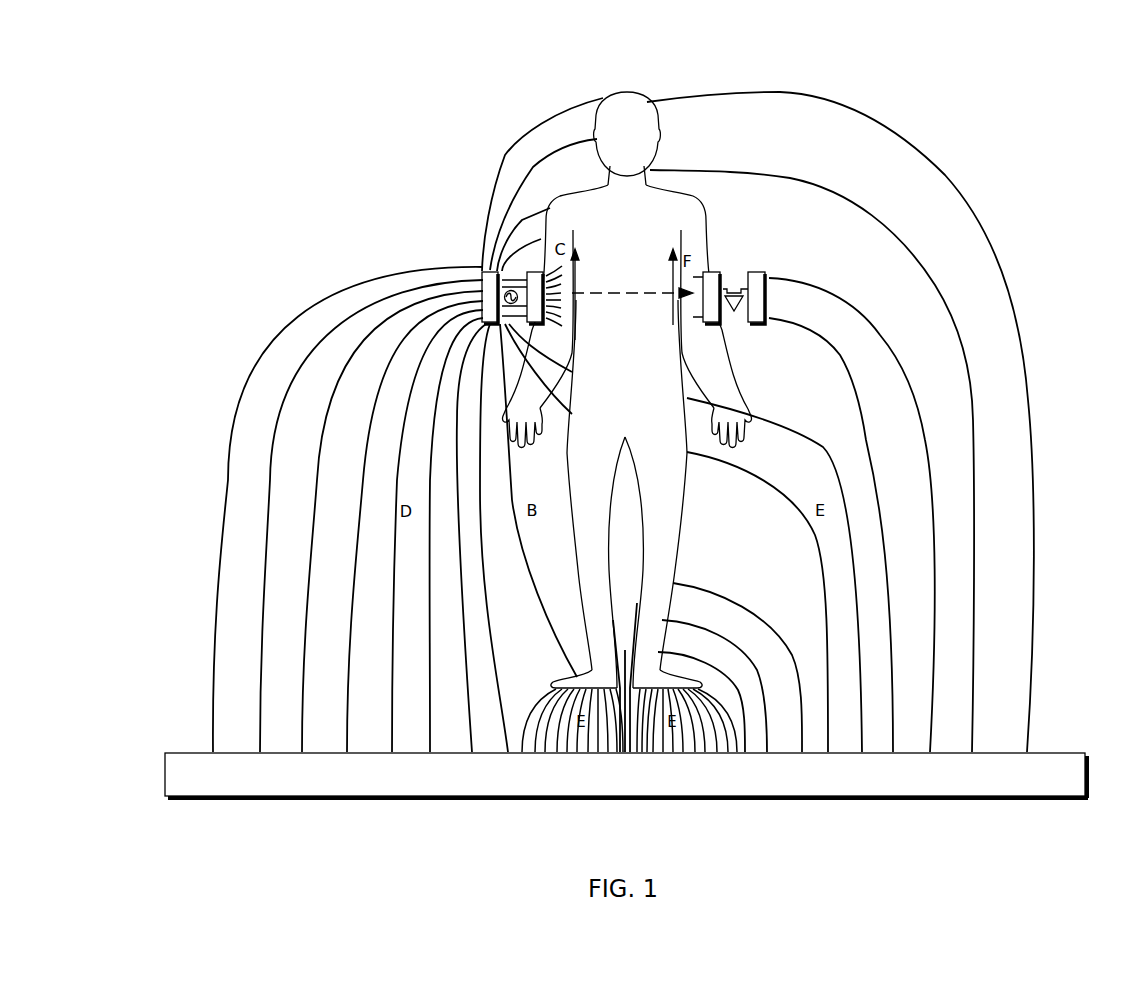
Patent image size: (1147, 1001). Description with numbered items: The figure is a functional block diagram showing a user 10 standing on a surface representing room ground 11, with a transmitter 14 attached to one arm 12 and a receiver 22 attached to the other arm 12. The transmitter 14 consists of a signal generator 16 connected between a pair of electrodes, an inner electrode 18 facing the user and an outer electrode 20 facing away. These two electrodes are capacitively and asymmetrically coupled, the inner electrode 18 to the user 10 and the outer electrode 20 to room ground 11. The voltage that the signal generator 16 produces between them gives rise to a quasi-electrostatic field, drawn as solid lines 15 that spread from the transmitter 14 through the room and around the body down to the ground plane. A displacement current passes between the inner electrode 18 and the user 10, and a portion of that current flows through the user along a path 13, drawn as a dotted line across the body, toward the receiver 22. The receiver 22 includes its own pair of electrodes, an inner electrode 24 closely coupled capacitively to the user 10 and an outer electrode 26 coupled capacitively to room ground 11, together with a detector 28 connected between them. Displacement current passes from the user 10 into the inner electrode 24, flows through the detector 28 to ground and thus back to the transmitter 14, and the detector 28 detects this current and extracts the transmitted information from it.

The user 10 is at (643, 82).
The room ground 11 is at (1080, 753).
The arm 12 is at (530, 410).
The path 13 is at (624, 300).
The transmitter 14 is at (466, 250).
The solid lines 15 is at (262, 355).
The signal generator 16 is at (540, 348).
The inner electrode 18 is at (532, 270).
The outer electrode 20 is at (480, 268).
The receiver 22 is at (814, 472).
The inner electrode 24 is at (708, 272).
The outer electrode 26 is at (764, 272).
The detector 28 is at (735, 313).